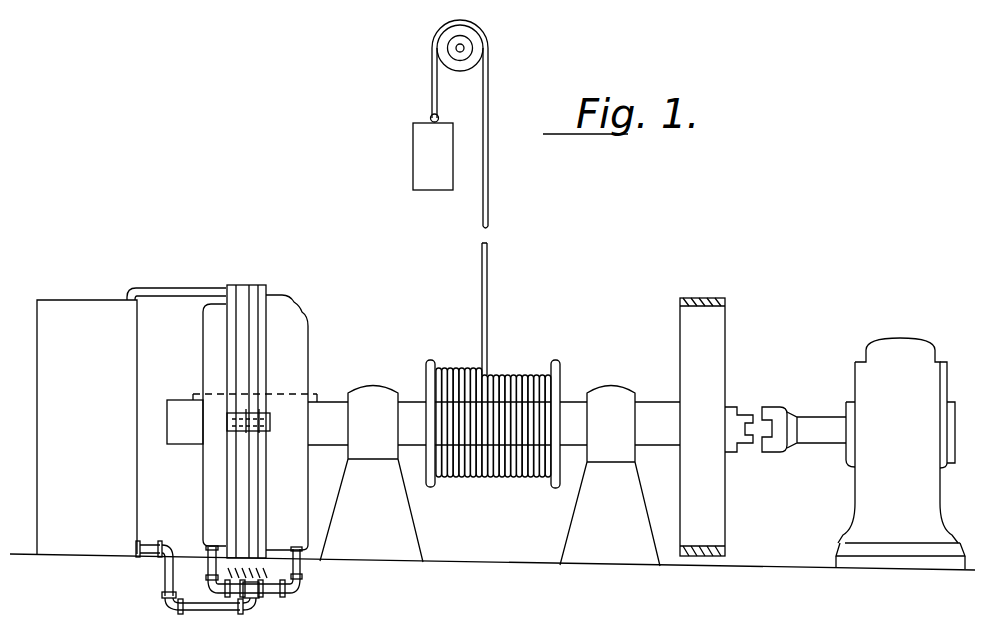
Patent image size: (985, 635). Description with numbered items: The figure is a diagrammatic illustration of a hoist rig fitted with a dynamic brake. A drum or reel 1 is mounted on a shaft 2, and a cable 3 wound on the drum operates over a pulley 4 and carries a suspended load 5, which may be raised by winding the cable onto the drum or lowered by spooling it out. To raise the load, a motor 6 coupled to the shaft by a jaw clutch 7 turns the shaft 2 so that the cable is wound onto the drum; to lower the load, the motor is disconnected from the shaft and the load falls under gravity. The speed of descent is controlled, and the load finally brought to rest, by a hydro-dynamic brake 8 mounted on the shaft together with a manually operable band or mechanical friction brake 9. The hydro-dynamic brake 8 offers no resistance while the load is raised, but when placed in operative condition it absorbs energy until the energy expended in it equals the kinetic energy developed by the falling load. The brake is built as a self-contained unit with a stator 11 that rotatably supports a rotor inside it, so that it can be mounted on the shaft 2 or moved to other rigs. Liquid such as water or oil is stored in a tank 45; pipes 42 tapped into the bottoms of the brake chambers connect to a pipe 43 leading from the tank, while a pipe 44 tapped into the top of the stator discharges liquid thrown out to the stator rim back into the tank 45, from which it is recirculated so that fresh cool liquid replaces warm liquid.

The drum or reel 1 is at (556, 372).
The shaft 2 is at (579, 438).
The cable 3 is at (489, 189).
The pulley 4 is at (458, 66).
The load 5 is at (439, 170).
The motor 6 is at (905, 448).
The jaw clutch 7 is at (785, 417).
The hydro-dynamic brake 8 is at (255, 407).
The band or mechanical friction brake 9 is at (754, 341).
The stator 11 is at (297, 343).
The pipes 42 is at (208, 583).
The pipe 43 is at (201, 606).
The pipe 44 is at (208, 288).
The tank 45 is at (97, 431).